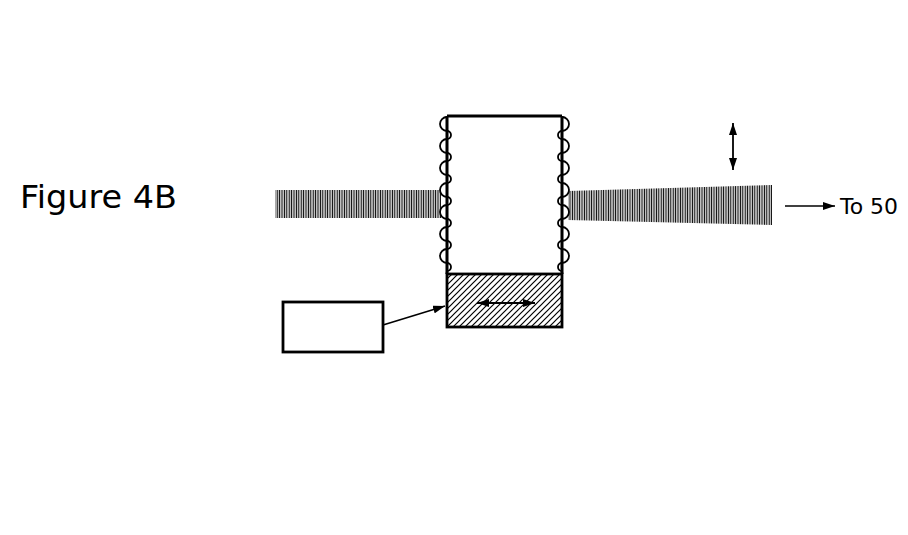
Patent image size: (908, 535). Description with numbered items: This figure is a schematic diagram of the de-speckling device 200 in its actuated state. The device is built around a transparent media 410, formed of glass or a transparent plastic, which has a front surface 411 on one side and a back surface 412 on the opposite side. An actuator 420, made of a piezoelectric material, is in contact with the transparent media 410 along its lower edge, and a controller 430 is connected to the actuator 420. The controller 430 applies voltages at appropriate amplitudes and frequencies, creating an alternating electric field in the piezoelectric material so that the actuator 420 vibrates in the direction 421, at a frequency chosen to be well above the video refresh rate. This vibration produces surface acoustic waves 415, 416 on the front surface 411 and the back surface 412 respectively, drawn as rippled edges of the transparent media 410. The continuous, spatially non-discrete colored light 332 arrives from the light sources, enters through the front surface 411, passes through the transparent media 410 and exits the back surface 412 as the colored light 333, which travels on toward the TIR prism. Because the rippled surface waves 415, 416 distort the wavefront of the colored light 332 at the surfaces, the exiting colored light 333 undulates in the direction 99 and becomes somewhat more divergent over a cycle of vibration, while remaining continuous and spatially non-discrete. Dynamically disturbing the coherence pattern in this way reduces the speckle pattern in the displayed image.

The de-speckling device 200 is at (492, 88).
The front surface 411 is at (446, 115).
The back surface 412 is at (562, 115).
The transparent media 410 is at (522, 159).
The surface acoustic wave 415 is at (440, 147).
The surface acoustic wave 416 is at (569, 143).
The actuator 420 is at (550, 303).
The direction 421 is at (506, 309).
The colored light 332 is at (331, 219).
The colored light 333 is at (723, 227).
The direction 99 is at (753, 146).
The controller 430 is at (352, 339).